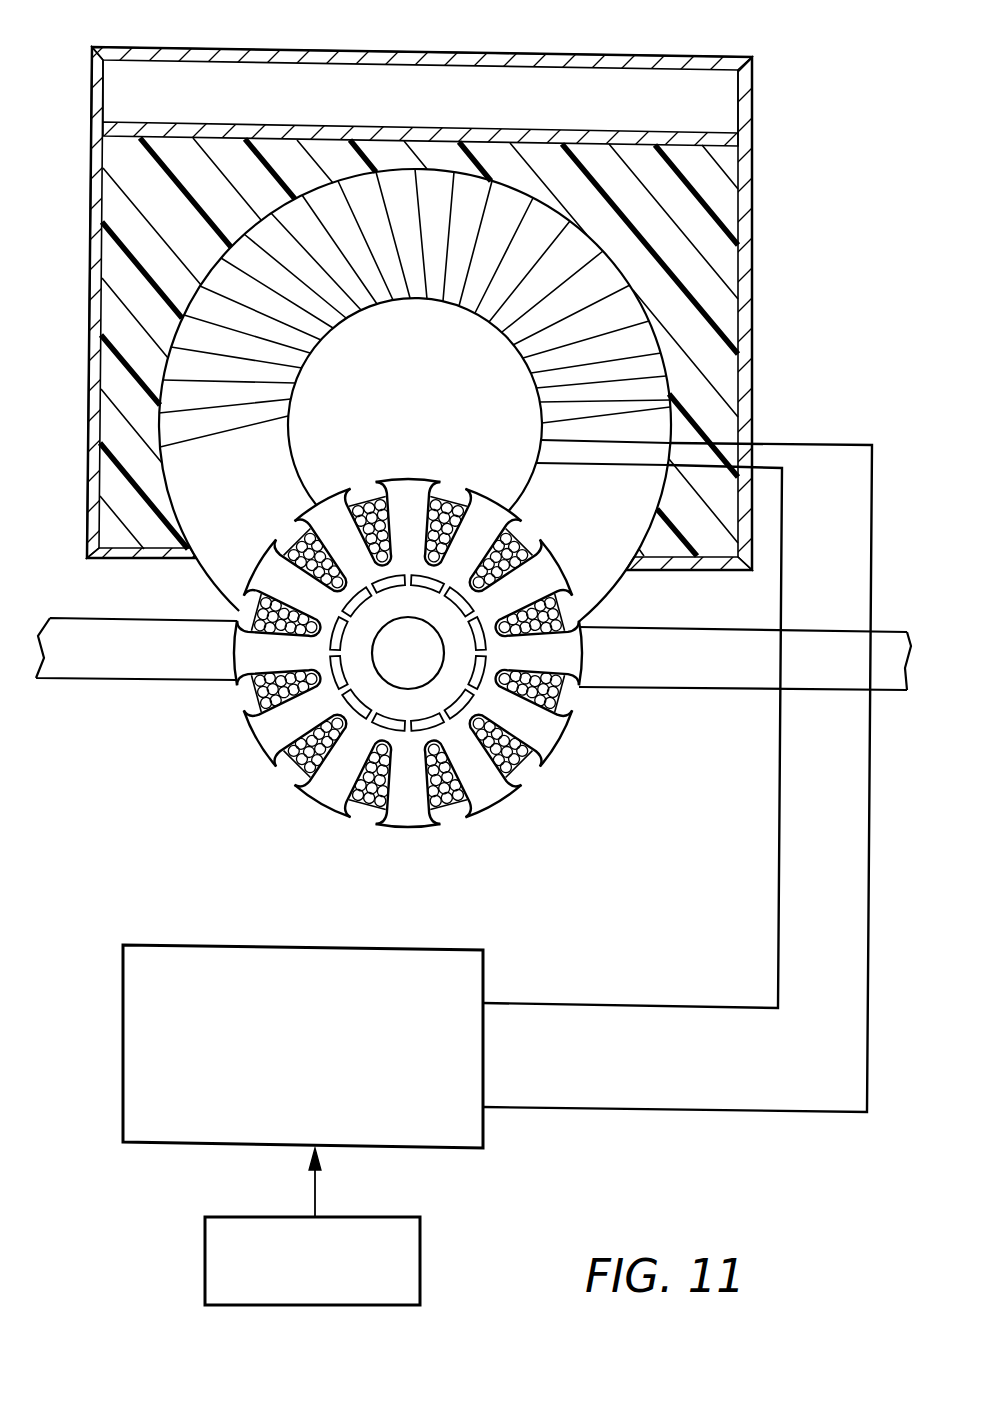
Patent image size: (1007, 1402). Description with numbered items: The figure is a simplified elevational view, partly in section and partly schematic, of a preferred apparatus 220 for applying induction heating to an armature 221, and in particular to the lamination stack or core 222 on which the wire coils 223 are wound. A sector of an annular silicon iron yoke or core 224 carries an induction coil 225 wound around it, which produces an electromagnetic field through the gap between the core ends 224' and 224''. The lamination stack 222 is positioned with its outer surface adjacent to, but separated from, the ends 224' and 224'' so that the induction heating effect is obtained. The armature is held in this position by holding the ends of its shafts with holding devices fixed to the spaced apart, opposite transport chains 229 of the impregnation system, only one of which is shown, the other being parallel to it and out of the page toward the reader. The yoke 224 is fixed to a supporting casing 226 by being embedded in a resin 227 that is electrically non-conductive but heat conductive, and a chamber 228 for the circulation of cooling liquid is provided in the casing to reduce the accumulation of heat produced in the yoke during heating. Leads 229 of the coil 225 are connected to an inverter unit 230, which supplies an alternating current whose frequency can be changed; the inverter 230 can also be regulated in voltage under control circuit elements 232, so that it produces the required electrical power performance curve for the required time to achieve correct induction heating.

The apparatus 220 is at (792, 184).
The armature 221 is at (567, 838).
The lamination stack 222 is at (325, 790).
The wire coils 223 is at (295, 785).
The yoke 224 is at (420, 395).
The core end 224' is at (481, 463).
The core end 224'' is at (559, 444).
The induction coil 225 is at (655, 405).
The supporting casing 226 is at (97, 252).
The resin 227 is at (118, 333).
The chamber 228 is at (540, 80).
The leads 229 is at (787, 480).
The inverter unit 230 is at (383, 970).
The control circuit elements 232 is at (417, 1278).